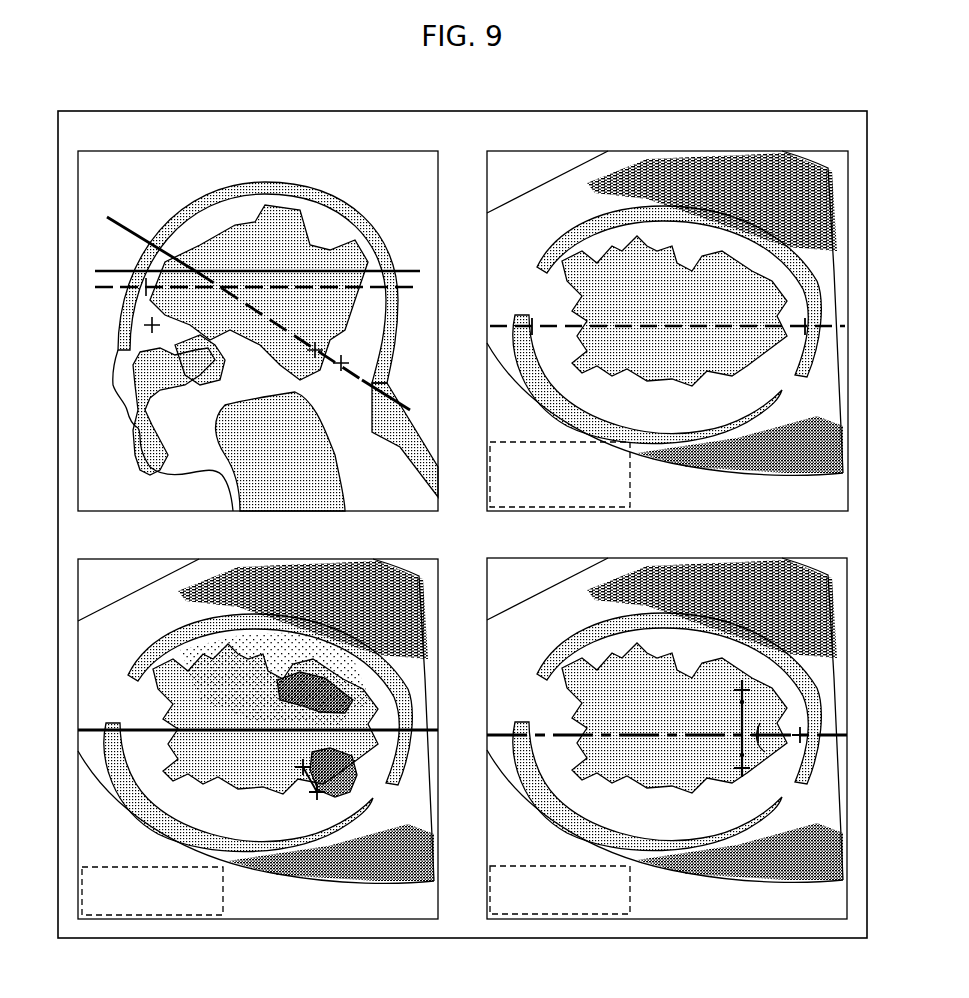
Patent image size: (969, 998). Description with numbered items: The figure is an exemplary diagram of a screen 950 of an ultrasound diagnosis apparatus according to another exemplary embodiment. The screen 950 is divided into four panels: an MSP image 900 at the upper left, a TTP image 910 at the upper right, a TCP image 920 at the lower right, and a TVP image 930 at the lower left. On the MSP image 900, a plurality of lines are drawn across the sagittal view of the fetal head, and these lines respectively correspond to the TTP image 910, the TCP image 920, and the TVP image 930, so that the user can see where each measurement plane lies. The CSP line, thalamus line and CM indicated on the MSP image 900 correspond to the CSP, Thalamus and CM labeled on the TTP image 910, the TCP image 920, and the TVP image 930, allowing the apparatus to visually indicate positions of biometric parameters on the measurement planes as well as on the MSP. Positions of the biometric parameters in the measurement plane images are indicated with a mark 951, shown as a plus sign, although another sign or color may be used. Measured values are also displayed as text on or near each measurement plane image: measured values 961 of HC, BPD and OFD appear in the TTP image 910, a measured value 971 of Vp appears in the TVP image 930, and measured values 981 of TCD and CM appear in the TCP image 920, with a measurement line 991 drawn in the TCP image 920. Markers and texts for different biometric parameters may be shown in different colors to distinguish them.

The screen 950 is at (788, 110).
The MSP image 900 is at (380, 152).
The TTP image 910 is at (787, 152).
The TCP image 920 is at (787, 559).
The TVP image 930 is at (380, 560).
The mark 951 is at (342, 352).
The measured values of HC, BPD, and OFD 961 is at (631, 481).
The measured value of Vp 971 is at (224, 890).
The measured values of TCD and CM 981 is at (631, 890).
The cisterna magna measurement line 991 is at (776, 735).